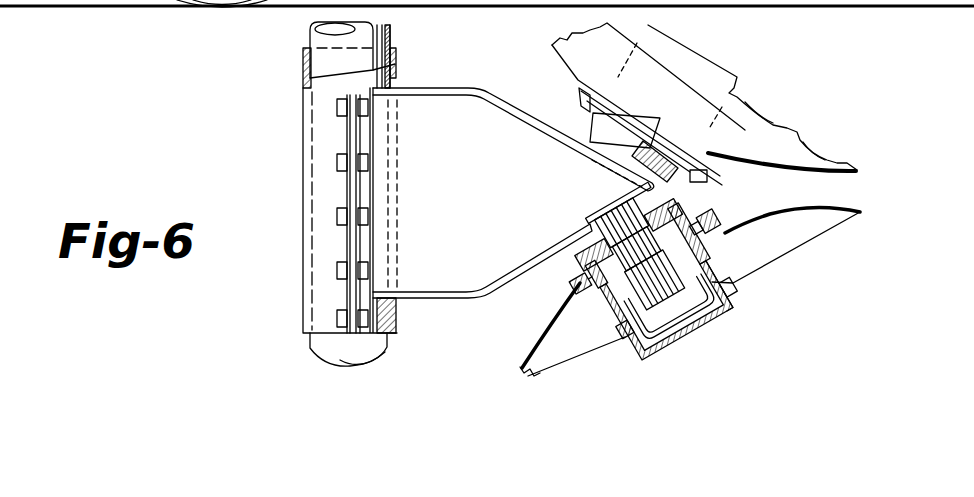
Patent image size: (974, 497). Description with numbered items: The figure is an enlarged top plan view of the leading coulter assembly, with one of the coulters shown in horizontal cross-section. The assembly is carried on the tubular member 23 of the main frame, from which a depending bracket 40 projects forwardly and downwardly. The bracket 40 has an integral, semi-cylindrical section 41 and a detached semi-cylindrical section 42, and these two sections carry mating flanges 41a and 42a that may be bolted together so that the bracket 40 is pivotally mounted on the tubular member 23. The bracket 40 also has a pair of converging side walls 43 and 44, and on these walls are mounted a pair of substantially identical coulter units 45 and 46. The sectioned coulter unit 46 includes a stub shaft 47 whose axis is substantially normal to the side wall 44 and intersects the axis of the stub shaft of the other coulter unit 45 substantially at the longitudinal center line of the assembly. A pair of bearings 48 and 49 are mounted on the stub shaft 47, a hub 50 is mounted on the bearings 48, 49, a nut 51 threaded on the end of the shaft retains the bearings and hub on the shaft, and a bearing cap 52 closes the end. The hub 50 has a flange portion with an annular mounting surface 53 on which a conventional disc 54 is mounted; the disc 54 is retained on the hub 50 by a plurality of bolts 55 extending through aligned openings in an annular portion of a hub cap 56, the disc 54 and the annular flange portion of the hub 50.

The tubular member 23 is at (389, 40).
The depending bracket 40 is at (513, 215).
The integral semi-cylindrical section 41 is at (391, 73).
The mating flange 41a is at (358, 139).
The detached semi-cylindrical section 42 is at (317, 190).
The mating flange 42a is at (347, 185).
The side wall 43 is at (533, 124).
The side wall 44 is at (522, 265).
The coulter unit 45 is at (800, 127).
The coulter unit 46 is at (812, 251).
The stub shaft 47 is at (734, 285).
The bearing 48 is at (572, 248).
The bearing 49 is at (627, 327).
The hub 50 is at (718, 219).
The nut 51 is at (693, 332).
The bearing cap 52 is at (667, 343).
The annular mounting surface 53 is at (568, 310).
The disc 54 is at (768, 262).
The bolt 55 is at (688, 209).
The hub cap 56 is at (733, 312).